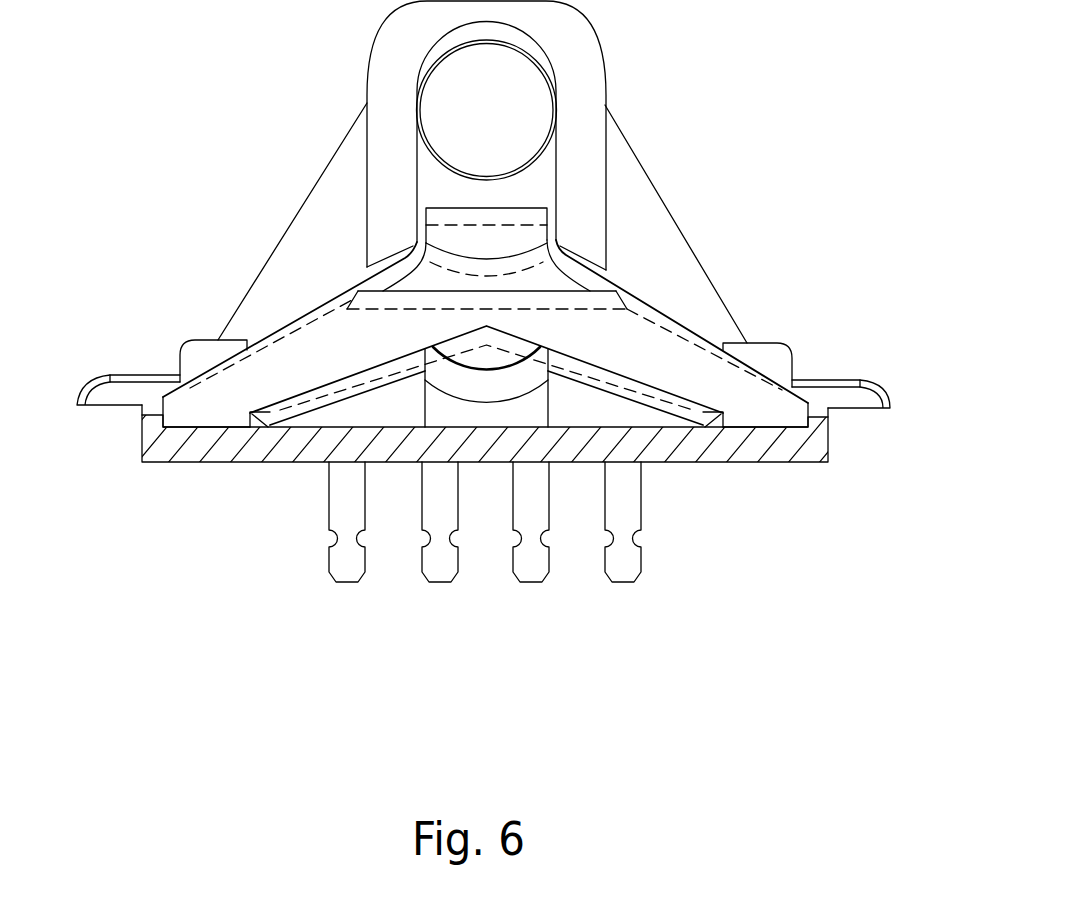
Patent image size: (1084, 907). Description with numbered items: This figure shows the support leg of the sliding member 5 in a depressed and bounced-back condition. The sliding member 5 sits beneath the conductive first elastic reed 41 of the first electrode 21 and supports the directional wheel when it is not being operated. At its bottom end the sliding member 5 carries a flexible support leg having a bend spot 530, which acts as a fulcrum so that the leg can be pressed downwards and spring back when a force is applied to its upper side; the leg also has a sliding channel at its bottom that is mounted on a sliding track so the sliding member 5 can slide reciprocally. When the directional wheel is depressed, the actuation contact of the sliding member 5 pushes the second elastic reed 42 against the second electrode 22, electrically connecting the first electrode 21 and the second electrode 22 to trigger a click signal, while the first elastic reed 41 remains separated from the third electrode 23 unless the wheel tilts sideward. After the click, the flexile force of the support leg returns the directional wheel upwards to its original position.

The sliding member 5 is at (633, 285).
The bend spot 530 is at (490, 307).
The first elastic reed 41 is at (527, 72).
The second elastic reed 42 is at (492, 358).
The first electrode 21 is at (350, 568).
The second electrode 22 is at (442, 568).
The third electrode 23 is at (625, 570).